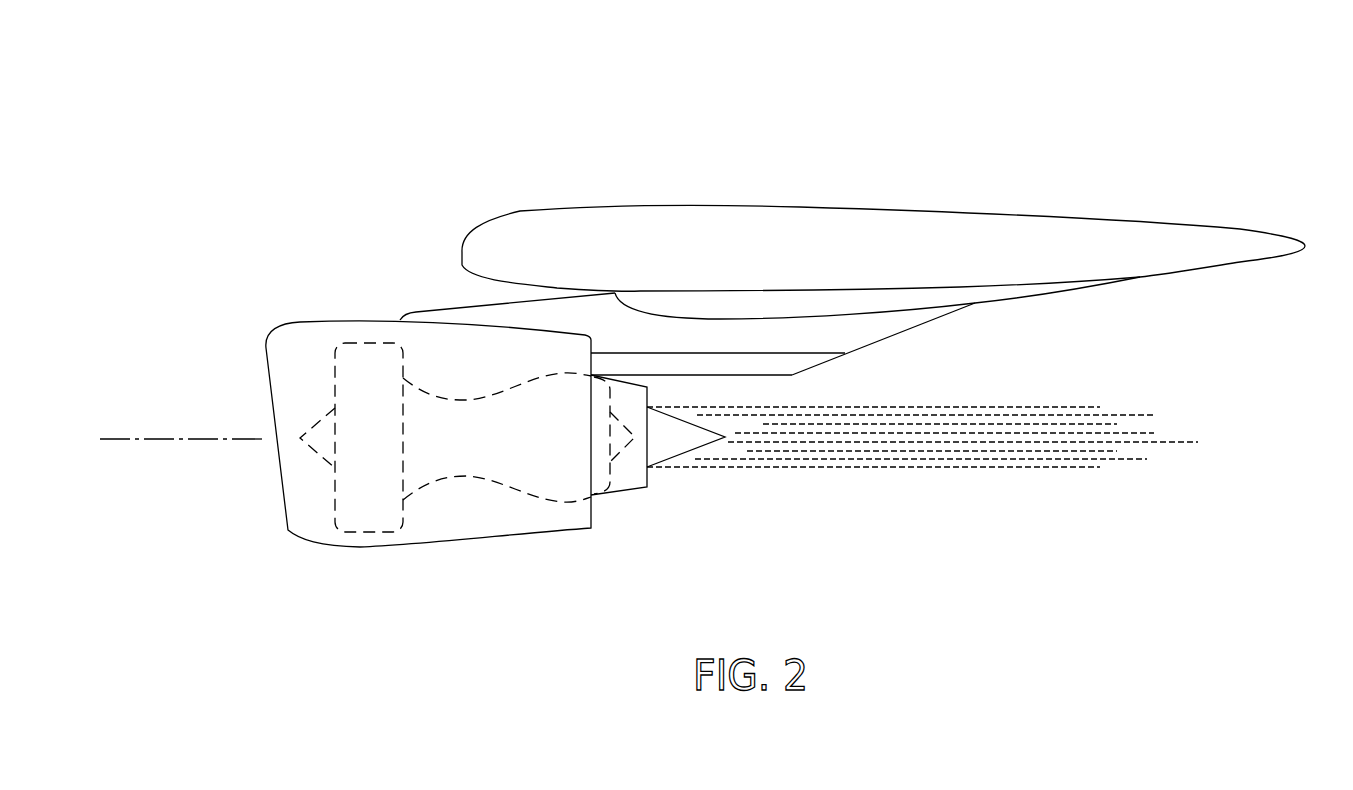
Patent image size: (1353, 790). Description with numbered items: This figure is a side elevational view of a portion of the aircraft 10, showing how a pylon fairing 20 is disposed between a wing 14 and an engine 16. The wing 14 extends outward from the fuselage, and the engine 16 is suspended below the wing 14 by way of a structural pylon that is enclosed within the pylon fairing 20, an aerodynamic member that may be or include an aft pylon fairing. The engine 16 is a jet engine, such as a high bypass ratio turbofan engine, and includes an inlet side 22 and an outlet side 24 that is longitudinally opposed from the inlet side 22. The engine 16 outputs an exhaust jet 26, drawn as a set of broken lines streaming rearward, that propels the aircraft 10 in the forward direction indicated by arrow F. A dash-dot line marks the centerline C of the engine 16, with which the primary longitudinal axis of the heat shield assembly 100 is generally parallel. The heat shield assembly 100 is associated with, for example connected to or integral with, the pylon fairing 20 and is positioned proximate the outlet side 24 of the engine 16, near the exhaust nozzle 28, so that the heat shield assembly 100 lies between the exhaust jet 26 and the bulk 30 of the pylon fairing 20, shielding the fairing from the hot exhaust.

The aircraft 10 is at (702, 354).
The wing 14 is at (805, 208).
The engine 16 is at (440, 547).
The pylon fairing 20 is at (447, 312).
The inlet side 22 is at (273, 562).
The outlet side 24 is at (602, 542).
The exhaust jet 26 is at (1075, 405).
The exhaust nozzle 28 is at (633, 492).
The bulk of the pylon fairing 30 is at (890, 328).
The heat shield assembly 100 is at (812, 362).
The forward direction F is at (333, 152).
The centerline C is at (205, 441).